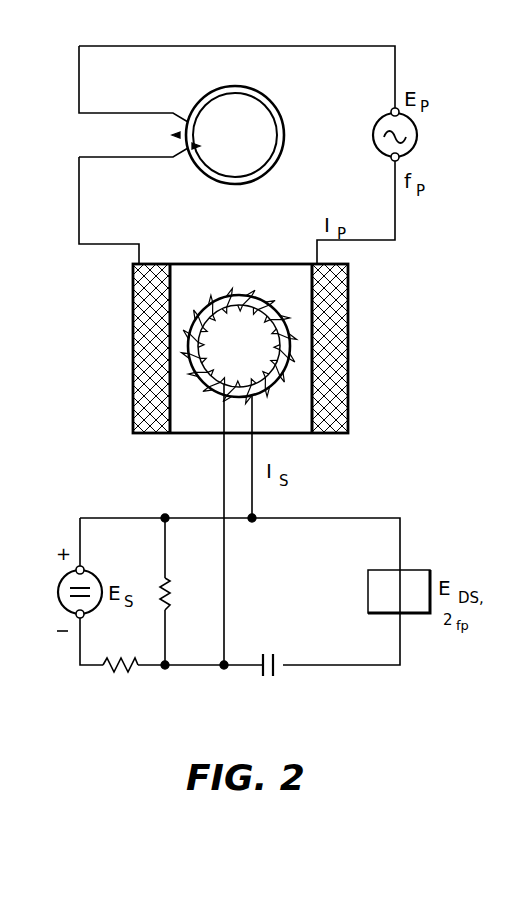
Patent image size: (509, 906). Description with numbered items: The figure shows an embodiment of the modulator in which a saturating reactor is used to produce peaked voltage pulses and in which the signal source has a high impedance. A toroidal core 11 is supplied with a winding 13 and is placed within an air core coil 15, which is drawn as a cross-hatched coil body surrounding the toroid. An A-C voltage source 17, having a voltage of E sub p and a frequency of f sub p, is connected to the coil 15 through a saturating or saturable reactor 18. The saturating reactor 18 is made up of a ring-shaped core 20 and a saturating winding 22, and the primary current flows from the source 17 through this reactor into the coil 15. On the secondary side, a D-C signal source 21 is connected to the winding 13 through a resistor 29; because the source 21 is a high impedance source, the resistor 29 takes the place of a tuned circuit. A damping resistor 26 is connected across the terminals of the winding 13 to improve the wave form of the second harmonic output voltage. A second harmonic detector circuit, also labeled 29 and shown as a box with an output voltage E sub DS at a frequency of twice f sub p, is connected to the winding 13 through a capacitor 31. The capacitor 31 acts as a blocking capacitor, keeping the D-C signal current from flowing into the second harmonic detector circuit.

The toroidal core 11 is at (238, 390).
The winding 13 is at (204, 390).
The air core coil 15 is at (133, 340).
The A-C voltage source 17 is at (418, 136).
The saturating reactor 18 is at (242, 168).
The core 20 is at (270, 172).
The D-C signal source 21 is at (58, 600).
The saturating winding 22 is at (200, 128).
The damping resistor 26 is at (162, 582).
The resistor 29 is at (104, 660).
The capacitor 31 is at (275, 670).